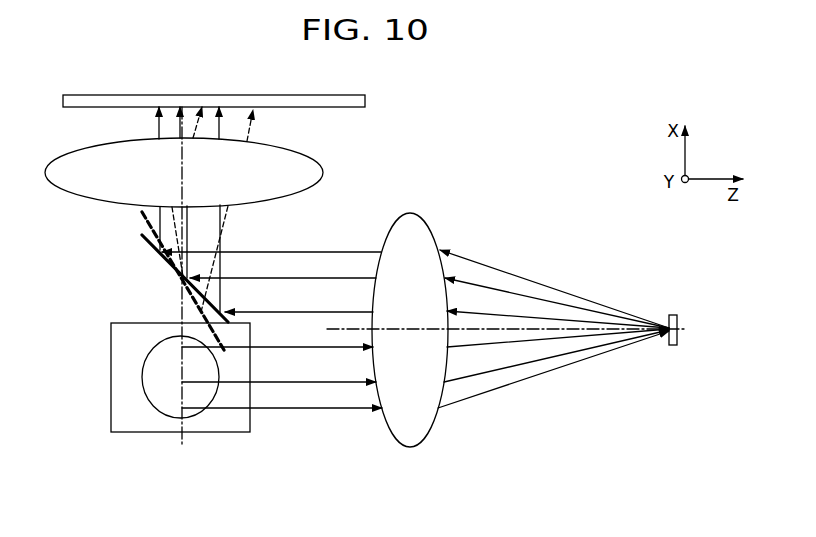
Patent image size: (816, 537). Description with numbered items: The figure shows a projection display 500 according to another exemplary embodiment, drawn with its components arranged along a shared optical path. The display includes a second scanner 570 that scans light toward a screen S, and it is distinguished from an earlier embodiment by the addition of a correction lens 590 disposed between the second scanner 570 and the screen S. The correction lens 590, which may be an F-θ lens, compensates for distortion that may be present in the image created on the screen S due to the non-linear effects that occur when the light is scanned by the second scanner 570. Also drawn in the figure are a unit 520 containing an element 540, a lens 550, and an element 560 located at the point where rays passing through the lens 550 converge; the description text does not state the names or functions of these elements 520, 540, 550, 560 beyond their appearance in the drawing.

The screen S is at (355, 101).
The projection display 500 is at (520, 121).
The light source unit 520 is at (207, 432).
The light source / emitter 540 is at (143, 380).
The condensing lens 550 is at (431, 428).
The light detector / focal element 560 is at (675, 316).
The second scanner 570 is at (153, 247).
The correction lens 590 is at (321, 173).